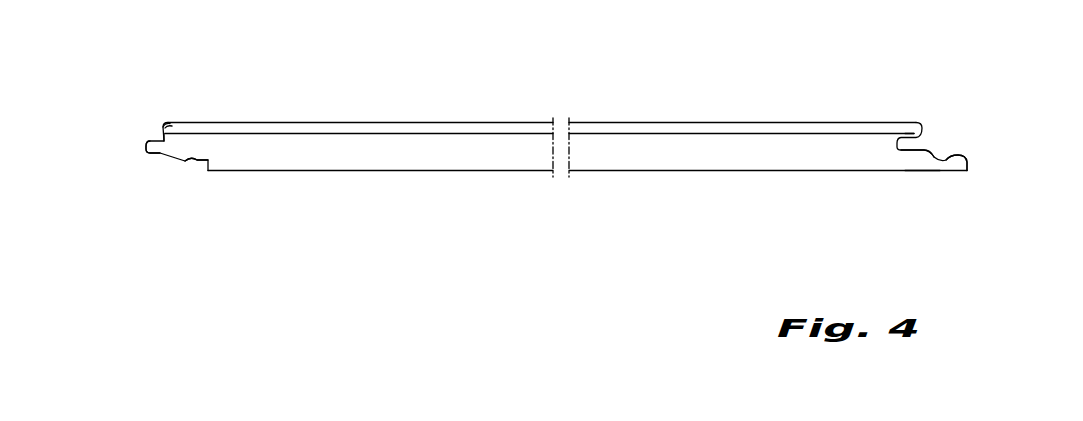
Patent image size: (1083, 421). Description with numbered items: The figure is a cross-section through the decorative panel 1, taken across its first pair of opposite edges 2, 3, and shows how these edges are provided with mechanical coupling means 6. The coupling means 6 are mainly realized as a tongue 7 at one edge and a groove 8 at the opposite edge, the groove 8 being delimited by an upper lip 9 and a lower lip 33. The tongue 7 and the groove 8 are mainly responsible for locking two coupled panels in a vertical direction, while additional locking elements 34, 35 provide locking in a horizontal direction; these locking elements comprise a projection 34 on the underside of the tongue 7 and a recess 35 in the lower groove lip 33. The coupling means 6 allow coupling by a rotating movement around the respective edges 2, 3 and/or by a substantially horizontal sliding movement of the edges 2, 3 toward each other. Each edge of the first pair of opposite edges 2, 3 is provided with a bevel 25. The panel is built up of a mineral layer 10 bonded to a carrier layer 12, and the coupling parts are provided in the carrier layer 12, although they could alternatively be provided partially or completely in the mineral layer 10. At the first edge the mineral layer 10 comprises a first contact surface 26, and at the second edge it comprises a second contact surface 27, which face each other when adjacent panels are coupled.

The decorative panel 1 is at (712, 117).
The first edge 2 is at (157, 88).
The second edge 3 is at (923, 73).
The mechanical coupling means 6 is at (141, 133).
The tongue 7 is at (158, 156).
The groove 8 is at (930, 157).
The upper lip 9 is at (878, 134).
The mineral layer 10 is at (335, 132).
The carrier layer 12 is at (360, 150).
The bevel 25 is at (160, 124).
The first contact surface 26 is at (168, 126).
The second contact surface 27 is at (898, 122).
The lower lip 33 is at (922, 169).
The projection 34 is at (187, 160).
The recess 35 is at (967, 158).